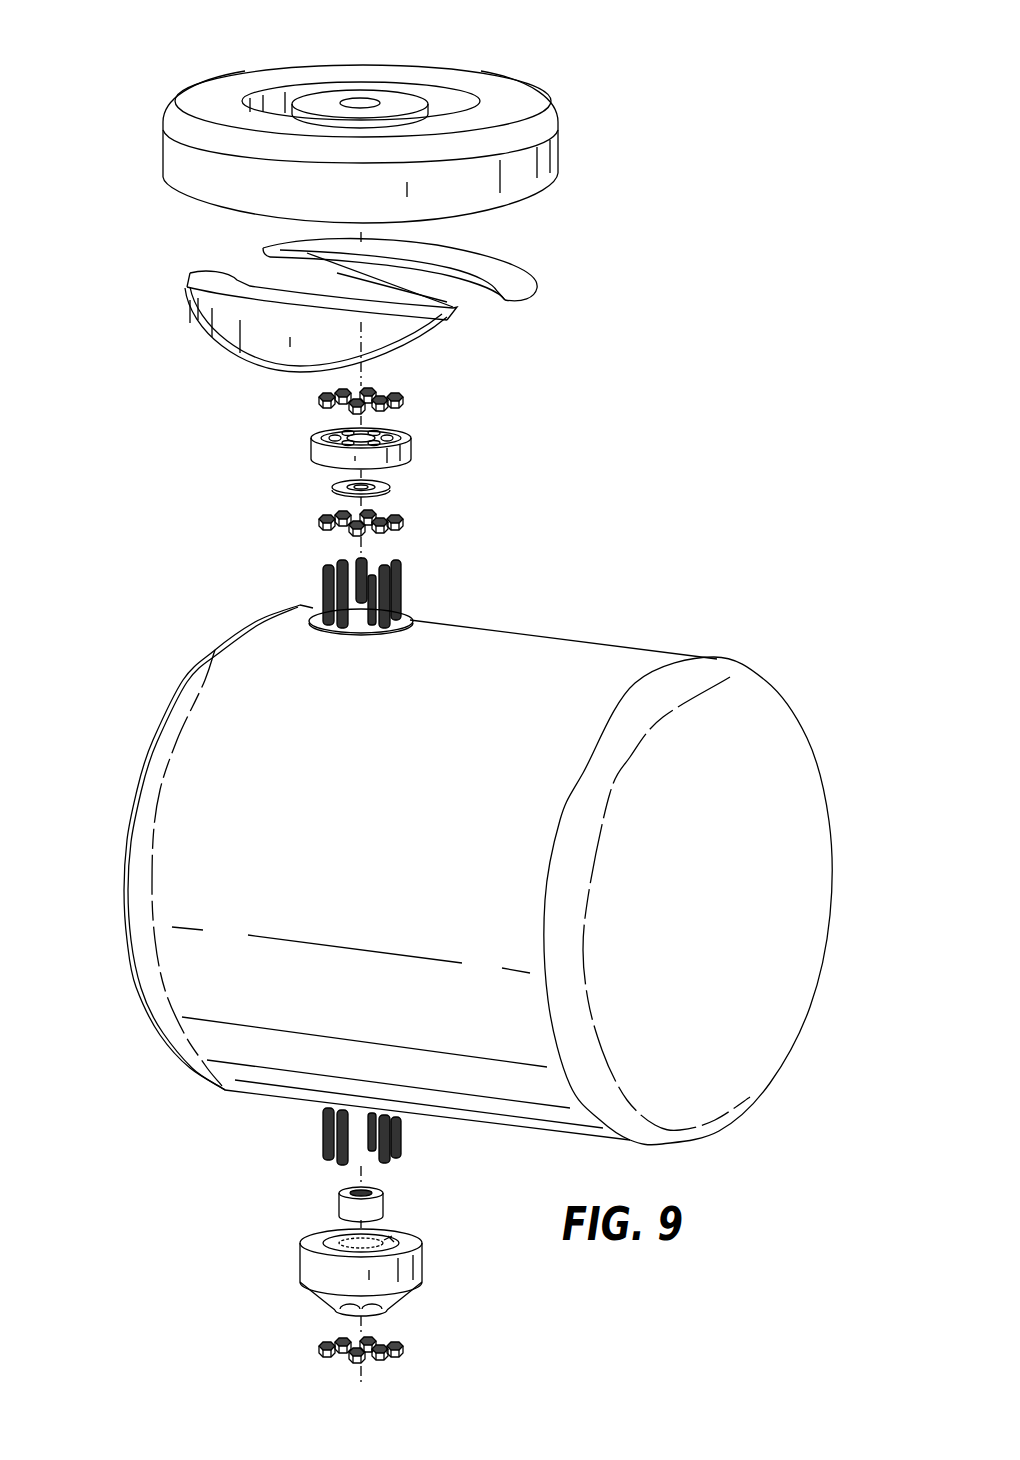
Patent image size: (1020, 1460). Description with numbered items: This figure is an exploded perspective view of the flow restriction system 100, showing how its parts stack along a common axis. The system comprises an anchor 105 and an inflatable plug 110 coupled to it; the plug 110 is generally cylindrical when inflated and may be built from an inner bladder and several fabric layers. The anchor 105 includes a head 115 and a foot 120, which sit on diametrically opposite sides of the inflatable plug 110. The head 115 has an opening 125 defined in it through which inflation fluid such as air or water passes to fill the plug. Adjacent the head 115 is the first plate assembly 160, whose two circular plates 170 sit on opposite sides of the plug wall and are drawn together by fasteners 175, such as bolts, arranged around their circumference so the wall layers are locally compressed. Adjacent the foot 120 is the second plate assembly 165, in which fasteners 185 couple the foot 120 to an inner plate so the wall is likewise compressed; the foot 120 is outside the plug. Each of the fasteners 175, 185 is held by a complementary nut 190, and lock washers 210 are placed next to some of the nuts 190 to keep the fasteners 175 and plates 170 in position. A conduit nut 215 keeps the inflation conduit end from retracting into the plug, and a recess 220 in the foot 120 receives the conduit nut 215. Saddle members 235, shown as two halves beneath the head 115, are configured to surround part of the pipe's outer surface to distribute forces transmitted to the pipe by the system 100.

The flow restriction system 100 is at (697, 164).
The anchor 105 is at (338, 296).
The inflatable plug 110 is at (760, 770).
The head 115 is at (178, 158).
The foot 120 is at (315, 1268).
The opening 125 is at (358, 99).
The first plate assembly 160 is at (472, 532).
The second plate assembly 165 is at (408, 1151).
The plates 170 is at (318, 450).
The fasteners 175 is at (400, 578).
The fasteners 185 is at (322, 1127).
The nut 190 is at (400, 394).
The lock washers 210 is at (330, 532).
The conduit nut 215 is at (345, 1205).
The recess 220 is at (386, 1232).
The saddle members 235 is at (535, 298).